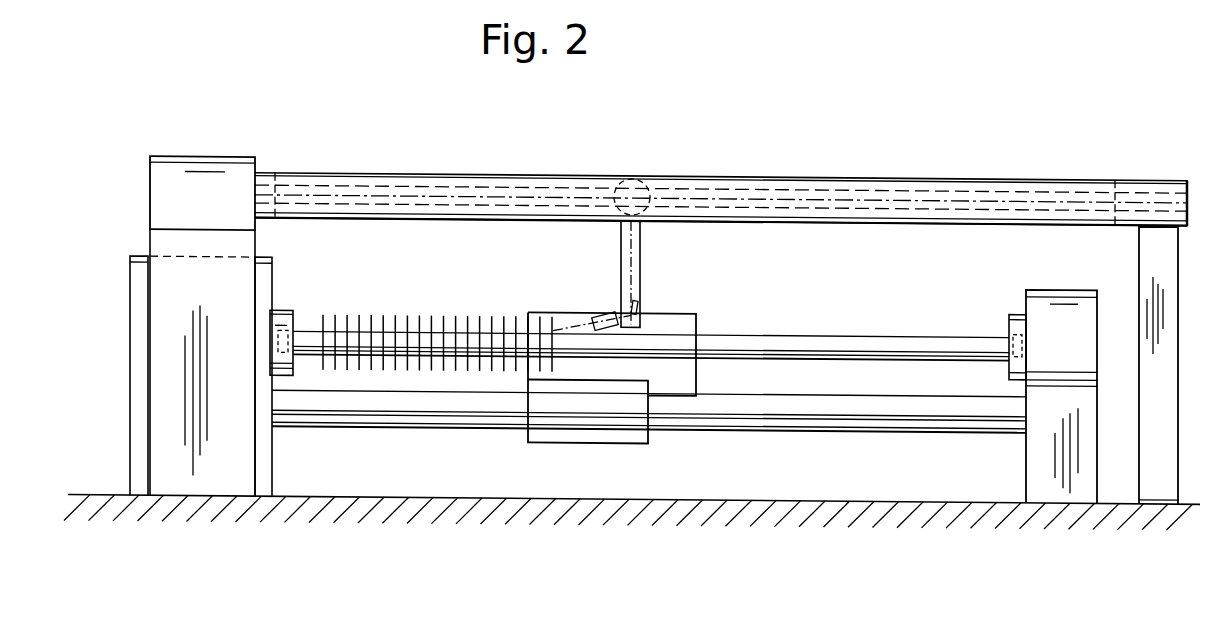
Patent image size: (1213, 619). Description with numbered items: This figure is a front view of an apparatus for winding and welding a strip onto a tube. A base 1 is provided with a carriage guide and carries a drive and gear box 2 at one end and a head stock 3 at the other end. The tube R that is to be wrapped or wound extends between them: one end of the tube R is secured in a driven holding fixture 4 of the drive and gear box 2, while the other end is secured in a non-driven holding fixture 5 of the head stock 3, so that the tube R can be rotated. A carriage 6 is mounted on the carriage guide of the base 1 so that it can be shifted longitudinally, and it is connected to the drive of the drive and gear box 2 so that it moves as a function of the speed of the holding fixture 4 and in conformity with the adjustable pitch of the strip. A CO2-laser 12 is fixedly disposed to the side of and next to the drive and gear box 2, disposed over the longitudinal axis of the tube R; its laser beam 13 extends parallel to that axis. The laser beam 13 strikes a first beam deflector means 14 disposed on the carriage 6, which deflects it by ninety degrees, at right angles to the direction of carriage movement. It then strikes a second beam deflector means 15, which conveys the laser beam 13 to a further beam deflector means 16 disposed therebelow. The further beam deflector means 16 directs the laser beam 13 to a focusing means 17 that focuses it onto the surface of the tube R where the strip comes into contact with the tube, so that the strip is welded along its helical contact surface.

The base 1 is at (741, 460).
The drive and gear box 2 is at (137, 473).
The head stock 3 is at (1067, 312).
The driven holding fixture 4 is at (283, 359).
The non-driven holding fixture 5 is at (1010, 310).
The carriage 6 is at (555, 424).
The CO2-laser 12 is at (203, 179).
The laser beam 13 is at (401, 188).
The first beam deflector means 14 is at (651, 225).
The second beam deflector means 15 is at (633, 193).
The further beam deflector means 16 is at (637, 301).
The focusing means 17 is at (600, 311).
The tube R is at (827, 336).